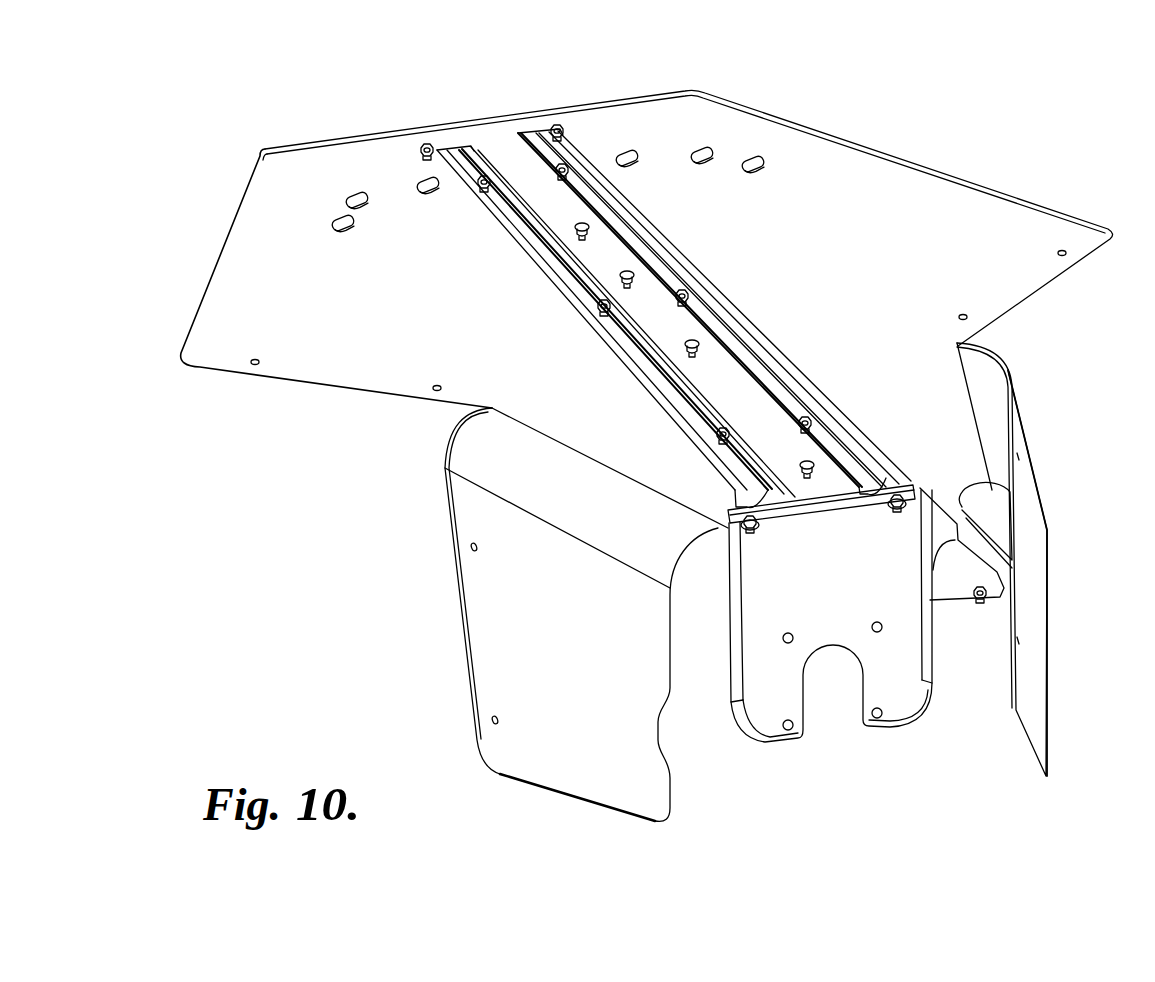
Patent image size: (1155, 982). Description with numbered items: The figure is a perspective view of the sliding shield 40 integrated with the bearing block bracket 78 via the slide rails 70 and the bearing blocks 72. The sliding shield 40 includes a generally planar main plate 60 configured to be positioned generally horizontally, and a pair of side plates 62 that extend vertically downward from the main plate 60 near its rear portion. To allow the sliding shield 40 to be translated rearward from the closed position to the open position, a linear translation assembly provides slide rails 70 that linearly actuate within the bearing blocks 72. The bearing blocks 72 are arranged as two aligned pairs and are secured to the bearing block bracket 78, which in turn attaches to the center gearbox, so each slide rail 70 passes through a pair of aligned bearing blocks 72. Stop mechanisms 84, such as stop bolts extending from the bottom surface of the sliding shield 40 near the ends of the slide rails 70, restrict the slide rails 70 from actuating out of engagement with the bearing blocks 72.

The sliding shield 40 is at (1016, 177).
The main plate 60 is at (832, 152).
The side plates 62 is at (491, 628).
The slide rails 70 is at (538, 135).
The bearing blocks 72 is at (738, 502).
The bearing block bracket 78 is at (893, 692).
The stop mechanisms 84 is at (425, 147).